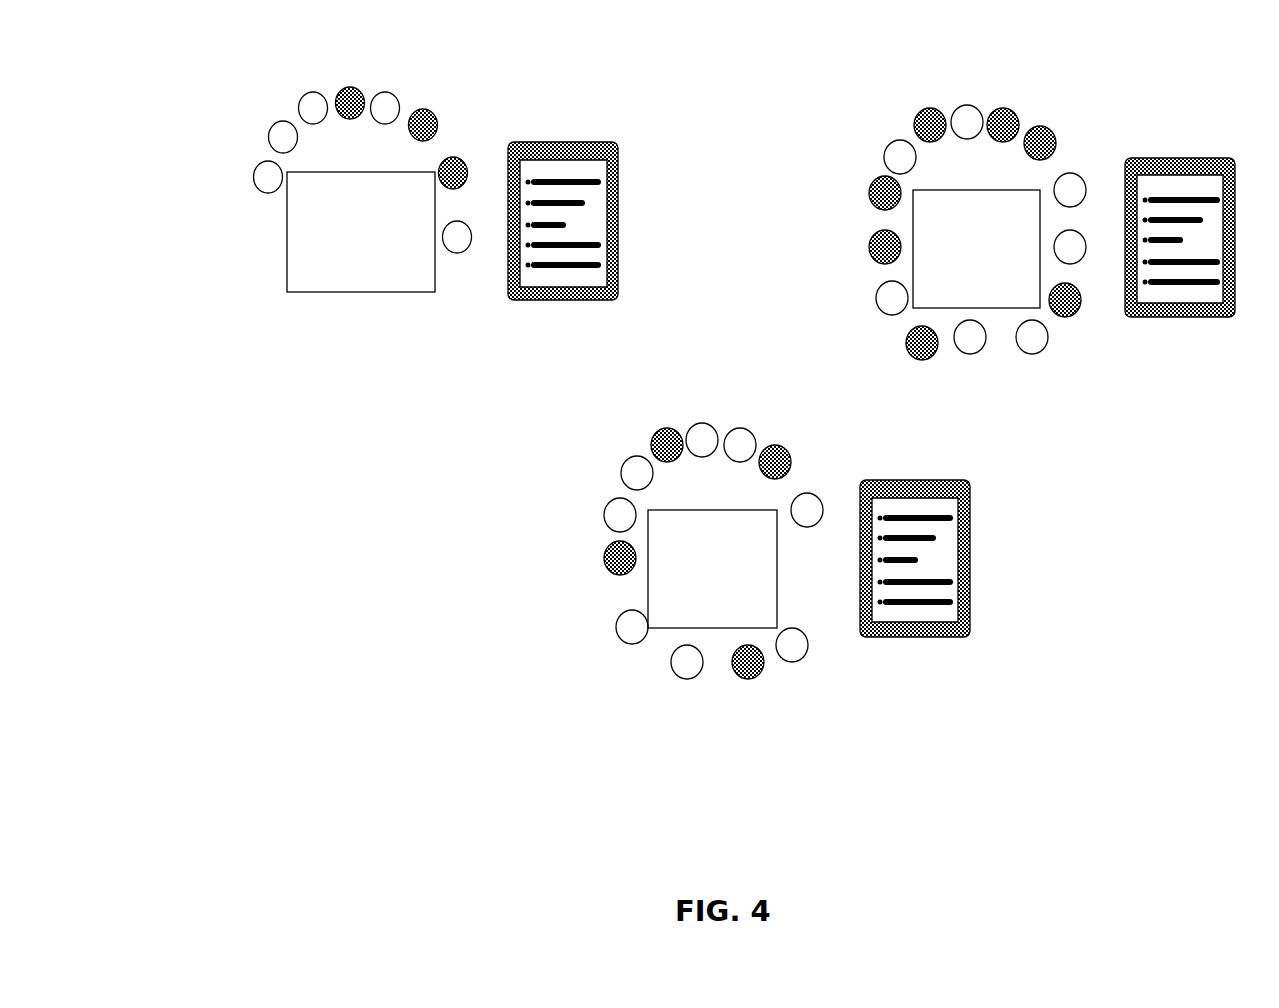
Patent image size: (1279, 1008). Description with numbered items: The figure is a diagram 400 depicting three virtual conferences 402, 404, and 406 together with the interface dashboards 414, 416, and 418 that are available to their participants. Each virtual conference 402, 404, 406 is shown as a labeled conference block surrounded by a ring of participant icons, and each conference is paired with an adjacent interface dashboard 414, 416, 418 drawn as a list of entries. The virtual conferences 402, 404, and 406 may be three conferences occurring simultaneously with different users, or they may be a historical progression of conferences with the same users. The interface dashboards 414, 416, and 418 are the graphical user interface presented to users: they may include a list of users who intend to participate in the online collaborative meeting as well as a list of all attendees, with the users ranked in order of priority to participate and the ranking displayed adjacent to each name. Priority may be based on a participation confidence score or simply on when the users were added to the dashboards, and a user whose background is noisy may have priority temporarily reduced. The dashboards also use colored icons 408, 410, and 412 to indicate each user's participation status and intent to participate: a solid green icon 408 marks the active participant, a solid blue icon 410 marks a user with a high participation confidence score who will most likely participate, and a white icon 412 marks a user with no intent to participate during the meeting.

The diagram 400 is at (169, 46).
The virtual conference 402 is at (310, 293).
The virtual conference 404 is at (955, 190).
The virtual conference 406 is at (777, 575).
The solid green icon 408 is at (430, 111).
The solid blue icon 410 is at (1042, 126).
The white icon 412 is at (777, 448).
The interface dashboard 414 is at (605, 142).
The interface dashboard 416 is at (1225, 158).
The interface dashboard 418 is at (958, 480).